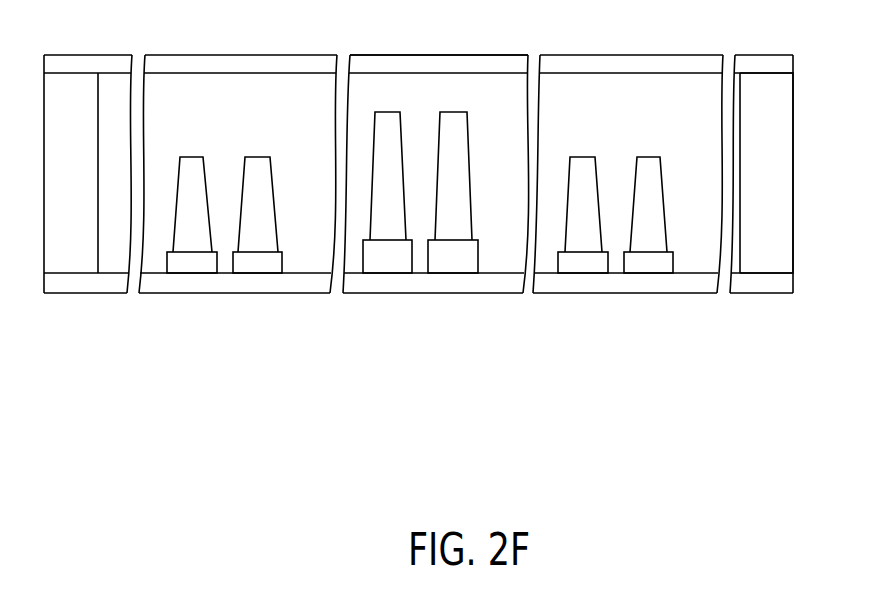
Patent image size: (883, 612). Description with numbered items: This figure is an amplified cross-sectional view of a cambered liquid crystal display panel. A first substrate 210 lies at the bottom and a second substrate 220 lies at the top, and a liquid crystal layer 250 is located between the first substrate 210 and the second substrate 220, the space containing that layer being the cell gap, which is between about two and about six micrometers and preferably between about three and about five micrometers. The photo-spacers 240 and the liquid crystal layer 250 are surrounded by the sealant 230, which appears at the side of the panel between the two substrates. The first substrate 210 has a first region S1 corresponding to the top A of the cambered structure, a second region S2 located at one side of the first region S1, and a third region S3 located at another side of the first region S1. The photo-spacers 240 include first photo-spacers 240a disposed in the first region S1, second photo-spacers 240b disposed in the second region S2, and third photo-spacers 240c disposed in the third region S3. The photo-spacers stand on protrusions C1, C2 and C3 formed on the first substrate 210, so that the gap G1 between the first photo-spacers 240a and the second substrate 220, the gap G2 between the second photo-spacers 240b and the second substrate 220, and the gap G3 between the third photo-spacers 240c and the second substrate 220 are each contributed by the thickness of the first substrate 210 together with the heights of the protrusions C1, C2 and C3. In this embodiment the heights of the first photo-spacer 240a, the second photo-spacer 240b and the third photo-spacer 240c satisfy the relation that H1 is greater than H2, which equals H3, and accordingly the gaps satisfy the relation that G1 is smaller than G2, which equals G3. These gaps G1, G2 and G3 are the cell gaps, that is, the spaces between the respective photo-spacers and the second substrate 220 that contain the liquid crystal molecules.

The second substrate 220 is at (770, 63).
The first substrate 210 is at (770, 282).
The liquid crystal layer 250 is at (732, 123).
The sealant 230 is at (772, 207).
The photo-spacers 240 is at (420, 261).
The first photo-spacer 240a is at (448, 228).
The second photo-spacer 240b is at (252, 240).
The third photo-spacer 240c is at (616, 258).
The protrusion C1 is at (459, 262).
The protrusion C2 is at (270, 267).
The protrusion C3 is at (647, 268).
The gap G1 is at (453, 73).
The gap G2 is at (257, 73).
The gap G3 is at (648, 73).
The height of first photo-spacer H1 is at (486, 112).
The height of second photo-spacer H2 is at (291, 157).
The height of third photo-spacer H3 is at (682, 157).
The first region S1 is at (523, 417).
The second region S2 is at (333, 417).
The third region S3 is at (717, 417).
The top of the cambered structure A is at (463, 52).